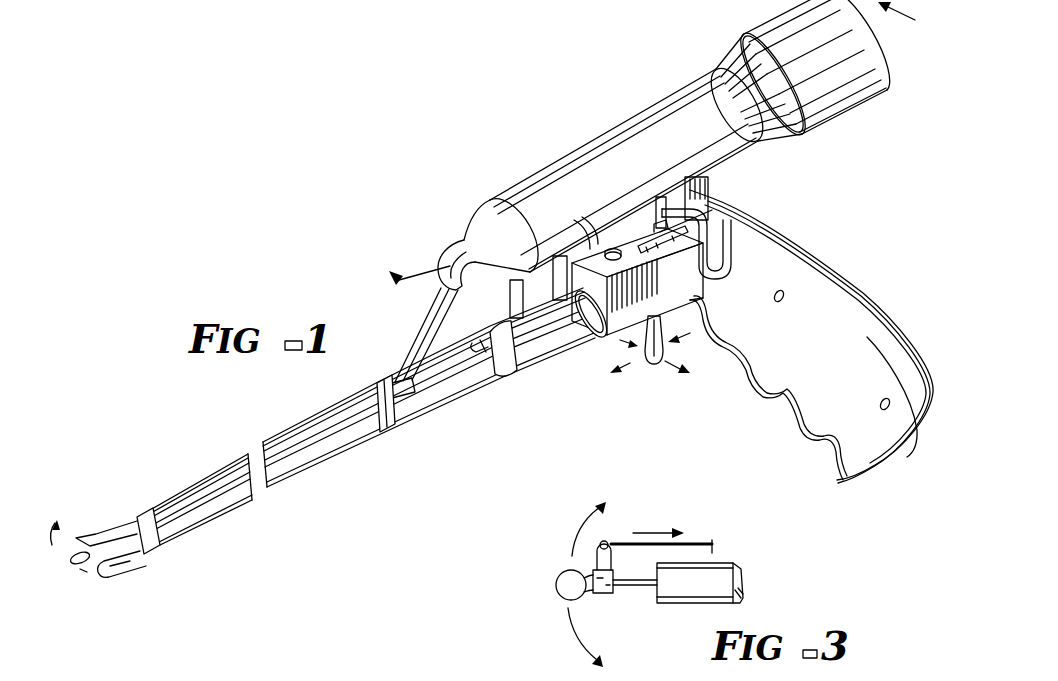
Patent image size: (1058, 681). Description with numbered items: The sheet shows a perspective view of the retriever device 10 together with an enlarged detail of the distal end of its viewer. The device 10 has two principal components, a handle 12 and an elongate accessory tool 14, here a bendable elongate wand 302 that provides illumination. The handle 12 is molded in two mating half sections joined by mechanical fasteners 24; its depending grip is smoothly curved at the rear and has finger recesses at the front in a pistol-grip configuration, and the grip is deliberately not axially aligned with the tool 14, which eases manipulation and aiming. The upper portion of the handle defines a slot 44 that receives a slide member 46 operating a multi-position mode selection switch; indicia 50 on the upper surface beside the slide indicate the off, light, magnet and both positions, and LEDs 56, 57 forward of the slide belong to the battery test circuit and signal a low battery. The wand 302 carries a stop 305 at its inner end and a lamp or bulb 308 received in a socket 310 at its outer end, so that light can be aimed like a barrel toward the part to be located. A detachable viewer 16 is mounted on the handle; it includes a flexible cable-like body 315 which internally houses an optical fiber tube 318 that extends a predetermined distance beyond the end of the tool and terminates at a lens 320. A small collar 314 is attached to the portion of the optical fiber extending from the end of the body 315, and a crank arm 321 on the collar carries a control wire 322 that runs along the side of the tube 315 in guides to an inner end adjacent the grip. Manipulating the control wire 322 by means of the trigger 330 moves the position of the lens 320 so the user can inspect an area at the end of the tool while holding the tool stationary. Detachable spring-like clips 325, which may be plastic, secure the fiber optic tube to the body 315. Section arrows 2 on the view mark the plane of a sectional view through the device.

In FIG. 1, the section line 2- 2 is at (656, 157).
In FIG. 1, the retriever device 10 is at (492, 305).
In FIG. 1, the handle 12 is at (811, 338).
In FIG. 1, the elongate accessory tool 14 is at (332, 448).
In FIG. 1, the detachable viewer 16 is at (588, 112).
In FIG. 1, the mechanical fasteners 24 is at (888, 411).
In FIG. 1, the slot 44 is at (612, 246).
In FIG. 1, the slide member 46 is at (648, 220).
In FIG. 1, the indicia 50 is at (723, 208).
In FIG. 1, the LED 56 is at (559, 227).
In FIG. 1, the LED 57 is at (588, 232).
In FIG. 1, the elongate wand 302 is at (325, 458).
In FIG. 1, the stop 305 is at (546, 352).
In FIG. 1, the lamp or bulb 308 is at (118, 572).
In FIG. 1, the socket 310 is at (160, 548).
In FIG. 3, the collar 314 is at (603, 594).
In FIG. 1, the cable-like body 315 is at (302, 436).
In FIG. 3, the cable-like body 315 is at (730, 567).
In FIG. 3, the optical fiber tube 318 is at (637, 588).
In FIG. 3, the lens 320 is at (553, 583).
In FIG. 3, the crank arm 321 is at (605, 532).
In FIG. 1, the control wire 322 is at (476, 339).
In FIG. 3, the control wire 322 is at (690, 540).
In FIG. 1, the detachable clips 325 is at (388, 433).
In FIG. 1, the trigger 330 is at (656, 366).